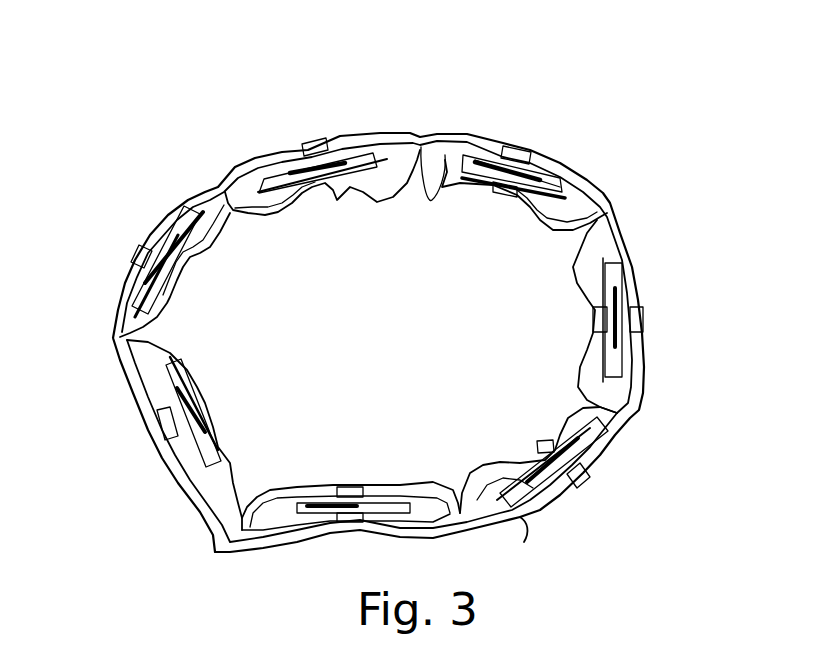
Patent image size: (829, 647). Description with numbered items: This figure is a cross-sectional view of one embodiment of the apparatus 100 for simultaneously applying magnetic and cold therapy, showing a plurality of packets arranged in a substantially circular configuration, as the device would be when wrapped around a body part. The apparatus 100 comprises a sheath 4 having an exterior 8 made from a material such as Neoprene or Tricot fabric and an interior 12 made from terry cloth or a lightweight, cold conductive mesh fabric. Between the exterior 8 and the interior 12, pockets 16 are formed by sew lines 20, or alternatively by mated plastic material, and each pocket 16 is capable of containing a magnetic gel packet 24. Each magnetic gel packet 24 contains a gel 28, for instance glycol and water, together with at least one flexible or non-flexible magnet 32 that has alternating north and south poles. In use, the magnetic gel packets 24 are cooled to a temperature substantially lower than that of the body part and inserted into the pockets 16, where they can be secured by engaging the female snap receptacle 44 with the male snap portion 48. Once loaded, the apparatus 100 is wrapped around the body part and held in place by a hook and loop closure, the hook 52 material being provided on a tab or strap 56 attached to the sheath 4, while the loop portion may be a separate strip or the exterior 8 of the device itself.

The apparatus for simultaneously applying magnetic and cold therapy 100 is at (438, 76).
The sheath 4 is at (228, 217).
The exterior 8 is at (114, 313).
The interior 12 is at (427, 202).
The pockets 16 is at (578, 206).
The sew lines 20 is at (638, 415).
The magnetic gel packet 24 is at (200, 512).
The gel 28 is at (183, 212).
The magnet 32 is at (126, 273).
The female snap receptacle 44 is at (355, 190).
The male snap portion 48 is at (313, 140).
The hook material 52 is at (520, 520).
The tab or strap 56 is at (329, 535).